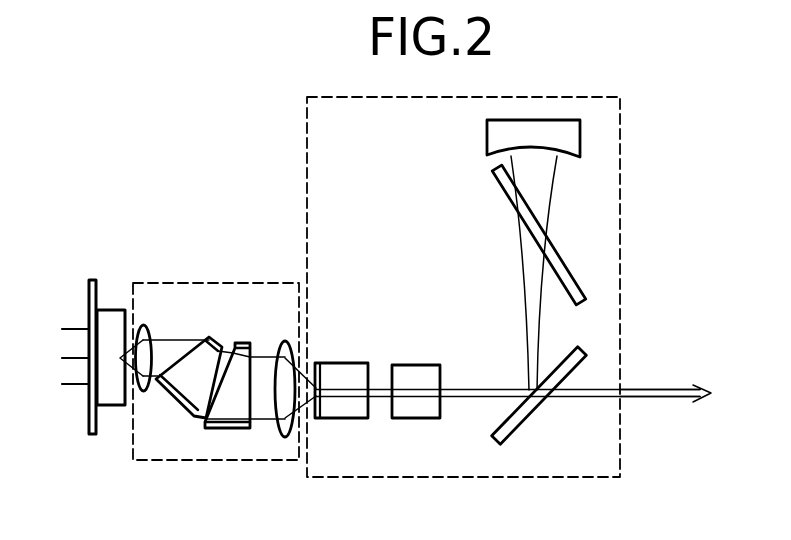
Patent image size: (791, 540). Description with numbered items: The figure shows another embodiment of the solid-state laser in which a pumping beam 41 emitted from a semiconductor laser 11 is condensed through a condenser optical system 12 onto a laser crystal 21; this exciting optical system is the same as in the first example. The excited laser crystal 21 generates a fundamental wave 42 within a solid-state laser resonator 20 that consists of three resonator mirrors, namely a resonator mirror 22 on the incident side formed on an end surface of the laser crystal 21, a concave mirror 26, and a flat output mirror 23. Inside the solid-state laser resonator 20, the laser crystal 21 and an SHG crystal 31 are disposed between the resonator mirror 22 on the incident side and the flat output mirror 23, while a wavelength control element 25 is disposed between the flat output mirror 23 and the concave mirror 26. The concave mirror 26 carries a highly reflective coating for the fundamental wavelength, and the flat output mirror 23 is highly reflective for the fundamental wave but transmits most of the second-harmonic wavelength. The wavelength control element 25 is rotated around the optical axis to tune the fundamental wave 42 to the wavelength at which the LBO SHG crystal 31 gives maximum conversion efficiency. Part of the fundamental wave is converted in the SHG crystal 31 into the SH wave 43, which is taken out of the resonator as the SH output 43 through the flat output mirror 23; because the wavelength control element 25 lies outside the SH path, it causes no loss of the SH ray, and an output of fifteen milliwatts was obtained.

The semiconductor laser 11 is at (90, 292).
The condenser optical system 12 is at (180, 282).
The solid-state laser resonator 20 is at (306, 152).
The laser crystal 21 is at (342, 363).
The resonator mirror on the incident side 22 is at (318, 415).
The flat output mirror 23 is at (533, 408).
The wavelength control element 25 is at (558, 257).
The concave mirror 26 is at (487, 136).
The SHG crystal 31 is at (417, 365).
The pumping beam 41 is at (265, 410).
The fundamental wave 42 is at (527, 273).
The SH wave (SH output) 43 is at (652, 389).